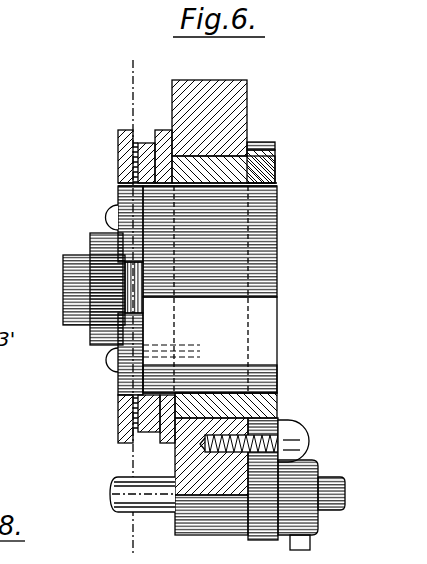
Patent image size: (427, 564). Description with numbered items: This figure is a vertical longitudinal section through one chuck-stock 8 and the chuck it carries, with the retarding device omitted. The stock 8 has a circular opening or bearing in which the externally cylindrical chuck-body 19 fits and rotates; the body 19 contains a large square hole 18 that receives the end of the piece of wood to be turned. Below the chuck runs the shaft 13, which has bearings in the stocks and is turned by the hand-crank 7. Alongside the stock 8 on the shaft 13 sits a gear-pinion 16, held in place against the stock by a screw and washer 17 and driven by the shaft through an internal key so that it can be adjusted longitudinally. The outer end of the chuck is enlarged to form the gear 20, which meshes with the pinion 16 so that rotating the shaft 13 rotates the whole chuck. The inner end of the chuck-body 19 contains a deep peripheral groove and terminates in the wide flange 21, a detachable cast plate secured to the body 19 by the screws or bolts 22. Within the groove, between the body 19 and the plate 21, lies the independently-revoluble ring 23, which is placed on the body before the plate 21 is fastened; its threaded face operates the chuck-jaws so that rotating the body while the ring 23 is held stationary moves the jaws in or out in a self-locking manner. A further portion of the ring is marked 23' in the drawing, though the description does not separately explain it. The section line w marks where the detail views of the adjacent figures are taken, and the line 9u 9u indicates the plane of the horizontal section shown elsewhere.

The chuck-stock 8 is at (213, 90).
The hand-crank 7 is at (143, 310).
The section line W W w is at (133, 296).
The shaft 13 is at (118, 493).
The gear-pinion 16 is at (266, 528).
The screw and washer 17 is at (288, 432).
The square hole 18 is at (210, 345).
The chuck-body 19 is at (211, 220).
The gear 20 is at (268, 148).
The flange 21 is at (125, 168).
The screws or bolts 22 is at (109, 213).
The independently-revoluble ring 23 is at (149, 121).
The recess 23' is at (173, 91).
The section line 9u 9u is at (58, 290).